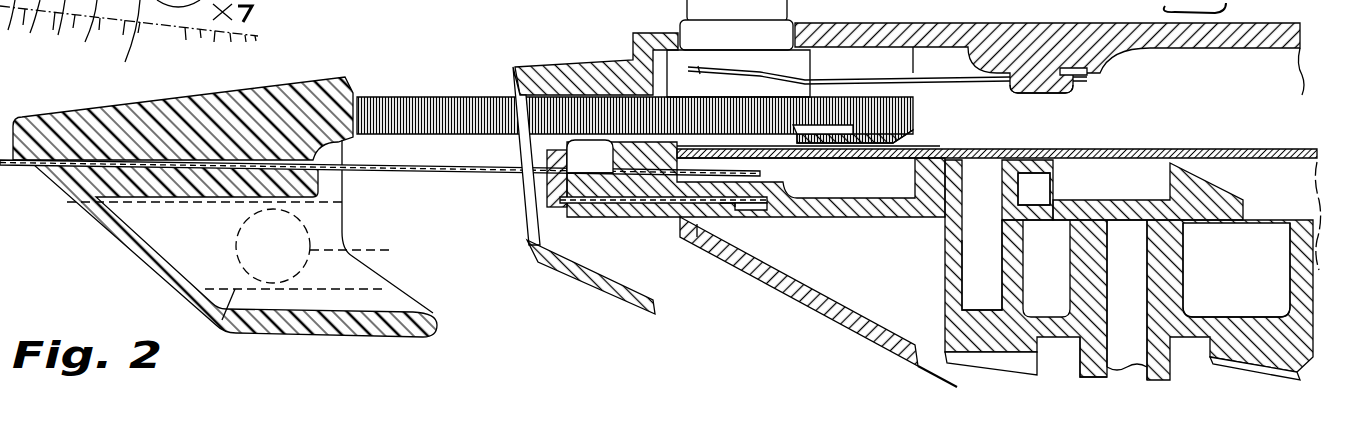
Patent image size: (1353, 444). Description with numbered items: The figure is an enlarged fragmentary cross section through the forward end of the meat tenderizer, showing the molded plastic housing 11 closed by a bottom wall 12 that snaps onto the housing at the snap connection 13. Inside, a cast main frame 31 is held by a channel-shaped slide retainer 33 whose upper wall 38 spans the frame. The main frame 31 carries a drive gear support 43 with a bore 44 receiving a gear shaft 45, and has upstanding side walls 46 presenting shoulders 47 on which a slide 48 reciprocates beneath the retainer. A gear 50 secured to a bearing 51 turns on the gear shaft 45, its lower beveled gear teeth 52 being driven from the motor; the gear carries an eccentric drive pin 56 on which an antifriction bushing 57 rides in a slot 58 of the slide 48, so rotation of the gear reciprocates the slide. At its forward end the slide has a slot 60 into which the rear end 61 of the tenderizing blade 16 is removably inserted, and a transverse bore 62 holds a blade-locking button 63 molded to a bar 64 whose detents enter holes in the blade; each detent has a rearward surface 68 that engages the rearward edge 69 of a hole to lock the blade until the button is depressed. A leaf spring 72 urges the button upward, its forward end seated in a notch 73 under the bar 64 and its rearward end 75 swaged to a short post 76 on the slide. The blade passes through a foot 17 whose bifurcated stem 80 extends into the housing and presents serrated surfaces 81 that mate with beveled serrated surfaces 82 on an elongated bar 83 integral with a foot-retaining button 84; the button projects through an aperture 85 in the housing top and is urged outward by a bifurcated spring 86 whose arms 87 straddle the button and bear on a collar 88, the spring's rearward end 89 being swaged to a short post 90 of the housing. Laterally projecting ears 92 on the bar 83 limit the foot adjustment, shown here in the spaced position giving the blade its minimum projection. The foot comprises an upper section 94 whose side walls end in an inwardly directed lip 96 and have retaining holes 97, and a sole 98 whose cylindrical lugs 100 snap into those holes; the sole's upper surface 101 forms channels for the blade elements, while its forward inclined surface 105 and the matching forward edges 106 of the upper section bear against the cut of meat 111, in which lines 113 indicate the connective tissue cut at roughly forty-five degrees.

The housing 11 is at (1049, 58).
The bottom wall 12 is at (613, 298).
The snap connection 13 is at (632, 58).
The tenderizing blade 16 is at (408, 205).
The foot 17 is at (226, 182).
The main frame 31 is at (887, 353).
The slide retainer 33 is at (997, 134).
The upper wall 38 is at (1243, 150).
The drive gear support 43 is at (1083, 354).
The bore 44 is at (1115, 369).
The gear shaft 45 is at (1127, 300).
The upstanding side walls 46 is at (794, 291).
The shoulders 47 is at (1256, 223).
The slide 48 is at (1203, 200).
The gear 50 is at (1101, 279).
The bearing 51 is at (1157, 270).
The beveled gear teeth 52 is at (1243, 366).
The drive pin 56 is at (977, 256).
The antifriction bushing 57 is at (1020, 157).
The slot 58 is at (1018, 184).
The slot 60 is at (546, 190).
The rear end 61 is at (673, 165).
The transverse bore 62 is at (550, 156).
The blade-locking button 63 is at (590, 156).
The bar 64 is at (572, 190).
The rearward surface 68 is at (663, 226).
The rearward edge 69 is at (613, 197).
The leaf spring 72 is at (693, 238).
The notch 73 is at (538, 248).
The rearward end 75 is at (763, 210).
The short post 76 is at (741, 208).
The bifurcated stem 80 is at (635, 90).
The serrated surfaces 81 is at (635, 101).
The beveled and serrated surfaces 82 is at (693, 111).
The elongated bar 83 is at (827, 100).
The foot-retaining button 84 is at (805, 25).
The aperture 85 is at (800, 33).
The spring 86 is at (913, 47).
The arms 87 is at (700, 66).
The collar 88 is at (730, 58).
The rearward end 89 is at (1085, 75).
The boss 90 is at (1013, 92).
The ears 92 is at (836, 136).
The upper section 94 is at (67, 110).
The lip 96 is at (222, 320).
The retaining hole 97 is at (226, 246).
The sole 98 is at (165, 0).
The cylindrical lugs 100 is at (344, 246).
The upper surface 101 is at (180, 170).
The forward inclined surface 105 is at (208, 161).
The forward edges 106 is at (100, 313).
The cut of meat 111 is at (97, 42).
The lines 113 is at (129, 27).